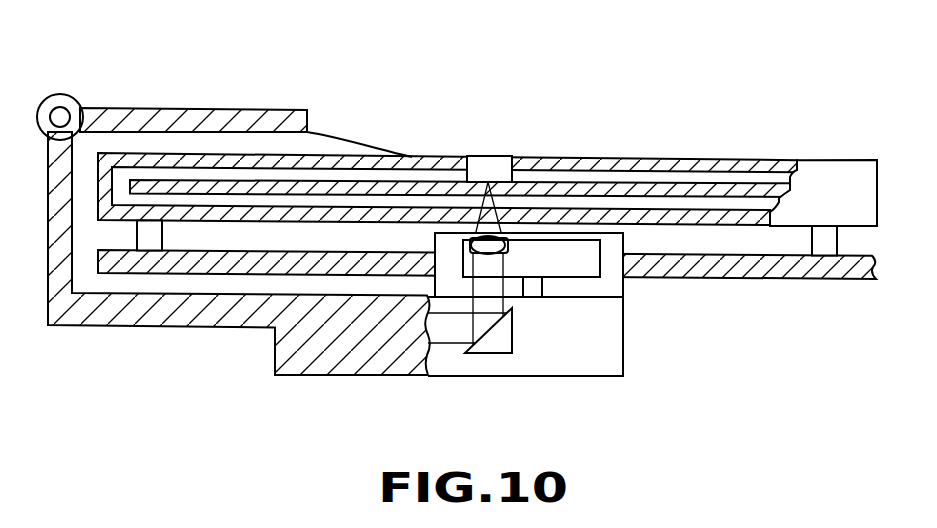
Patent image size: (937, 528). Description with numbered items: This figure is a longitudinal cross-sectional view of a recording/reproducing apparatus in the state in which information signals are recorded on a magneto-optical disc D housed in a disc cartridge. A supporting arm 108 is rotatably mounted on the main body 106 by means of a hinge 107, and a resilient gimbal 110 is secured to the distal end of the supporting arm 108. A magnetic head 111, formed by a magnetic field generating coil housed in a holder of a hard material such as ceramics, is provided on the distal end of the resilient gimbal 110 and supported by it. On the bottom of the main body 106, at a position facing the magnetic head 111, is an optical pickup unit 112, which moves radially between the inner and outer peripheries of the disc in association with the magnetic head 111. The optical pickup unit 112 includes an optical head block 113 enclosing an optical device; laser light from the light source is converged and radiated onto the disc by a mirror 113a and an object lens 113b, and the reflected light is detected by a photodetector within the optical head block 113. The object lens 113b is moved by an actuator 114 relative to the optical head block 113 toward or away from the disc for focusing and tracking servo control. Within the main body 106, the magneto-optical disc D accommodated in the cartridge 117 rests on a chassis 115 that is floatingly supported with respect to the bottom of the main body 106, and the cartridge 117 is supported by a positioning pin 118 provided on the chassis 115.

The main body 106 is at (58, 240).
The hinge 107 is at (60, 112).
The supporting arm 108 is at (233, 112).
The resilient gimbal 110 is at (343, 143).
The magnetic head 111 is at (488, 167).
The optical pickup unit 112 is at (606, 388).
The optical head block 113 is at (608, 352).
The mirror 113a is at (502, 333).
The object lens 113b is at (495, 250).
The actuator 114 is at (600, 260).
The chassis 115 is at (237, 260).
The cartridge 117 is at (103, 187).
The positioning pin 118 is at (148, 230).
The magneto-optical disc D is at (690, 192).